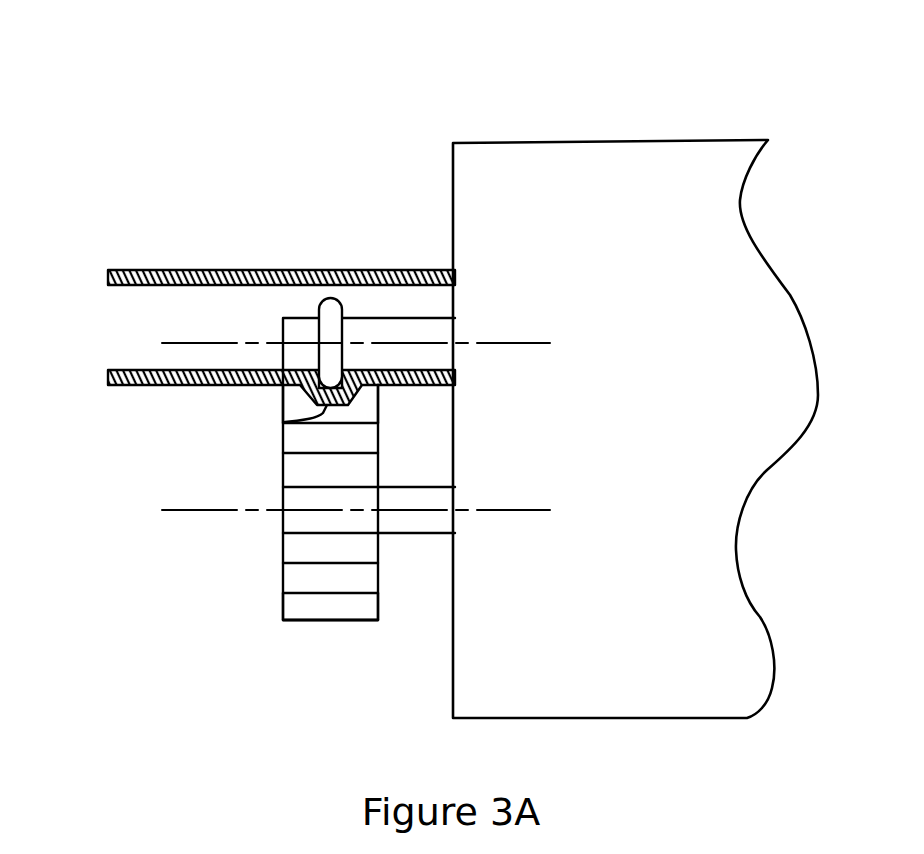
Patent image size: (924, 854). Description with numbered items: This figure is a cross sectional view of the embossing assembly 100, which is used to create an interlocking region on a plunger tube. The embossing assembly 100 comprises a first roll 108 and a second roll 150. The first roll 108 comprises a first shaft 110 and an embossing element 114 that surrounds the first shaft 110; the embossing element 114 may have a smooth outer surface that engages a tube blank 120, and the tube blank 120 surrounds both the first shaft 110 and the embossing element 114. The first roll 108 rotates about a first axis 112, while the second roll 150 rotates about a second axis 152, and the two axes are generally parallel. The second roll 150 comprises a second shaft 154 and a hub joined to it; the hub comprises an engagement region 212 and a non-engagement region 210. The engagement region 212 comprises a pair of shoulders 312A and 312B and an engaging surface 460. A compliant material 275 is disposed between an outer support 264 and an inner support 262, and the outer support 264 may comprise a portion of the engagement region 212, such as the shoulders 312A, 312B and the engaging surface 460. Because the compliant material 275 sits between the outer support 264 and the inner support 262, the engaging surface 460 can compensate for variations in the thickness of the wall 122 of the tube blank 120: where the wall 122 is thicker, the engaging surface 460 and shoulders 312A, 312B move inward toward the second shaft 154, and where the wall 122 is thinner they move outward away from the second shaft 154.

The embossing assembly 100 is at (707, 117).
The first roll 108 is at (276, 338).
The first shaft 110 is at (387, 328).
The first axis 112 is at (519, 343).
The embossing element 114 is at (332, 310).
The tube blank 120 is at (184, 270).
The wall 122 is at (258, 270).
The second roll 150 is at (273, 525).
The second axis 152 is at (519, 510).
The second shaft 154 is at (397, 525).
The non-engagement region 210 is at (310, 620).
The engagement region 212 is at (281, 423).
The inner support 262 is at (292, 549).
The outer support 264 is at (343, 612).
The compliant material 275 is at (357, 446).
The shoulder 312A is at (278, 411).
The shoulder 312B is at (367, 404).
The engaging surface 460 is at (287, 422).